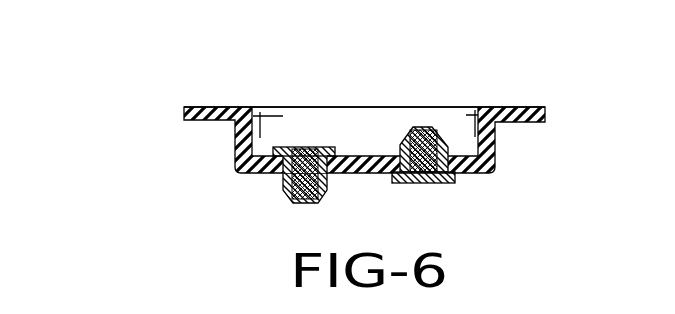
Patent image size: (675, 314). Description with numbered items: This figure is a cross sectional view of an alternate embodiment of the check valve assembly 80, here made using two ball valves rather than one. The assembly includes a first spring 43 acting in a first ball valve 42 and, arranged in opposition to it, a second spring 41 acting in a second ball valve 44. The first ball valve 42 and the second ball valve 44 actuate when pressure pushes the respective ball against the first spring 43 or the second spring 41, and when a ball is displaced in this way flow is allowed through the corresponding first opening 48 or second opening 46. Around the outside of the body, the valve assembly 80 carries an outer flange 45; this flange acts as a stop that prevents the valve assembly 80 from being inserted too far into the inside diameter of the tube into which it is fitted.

The check valve assembly 80 is at (326, 124).
The outer flange 45 is at (508, 107).
The first spring 43 is at (287, 180).
The first ball valve 42 is at (325, 147).
The first opening 48 is at (303, 147).
The second spring 41 is at (404, 130).
The second ball valve 44 is at (440, 130).
The second opening 46 is at (430, 183).